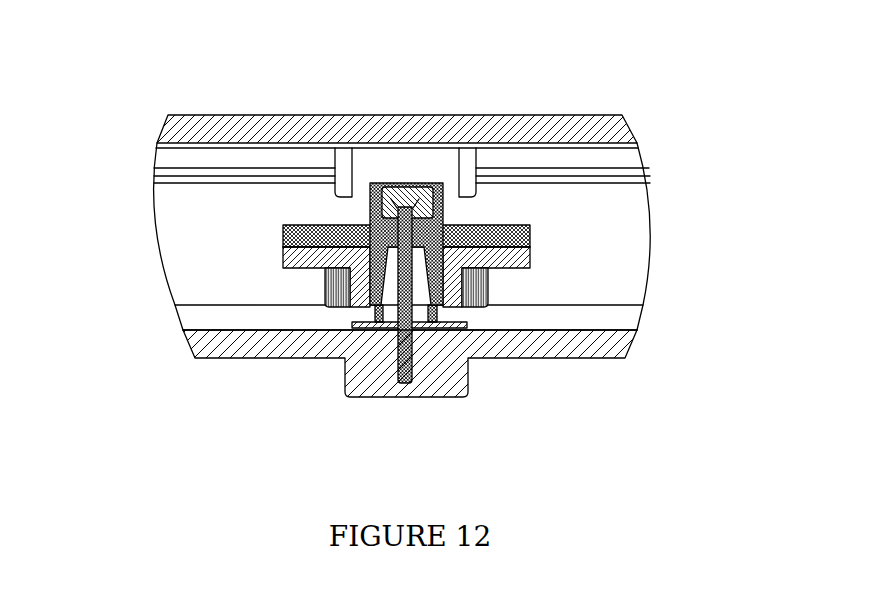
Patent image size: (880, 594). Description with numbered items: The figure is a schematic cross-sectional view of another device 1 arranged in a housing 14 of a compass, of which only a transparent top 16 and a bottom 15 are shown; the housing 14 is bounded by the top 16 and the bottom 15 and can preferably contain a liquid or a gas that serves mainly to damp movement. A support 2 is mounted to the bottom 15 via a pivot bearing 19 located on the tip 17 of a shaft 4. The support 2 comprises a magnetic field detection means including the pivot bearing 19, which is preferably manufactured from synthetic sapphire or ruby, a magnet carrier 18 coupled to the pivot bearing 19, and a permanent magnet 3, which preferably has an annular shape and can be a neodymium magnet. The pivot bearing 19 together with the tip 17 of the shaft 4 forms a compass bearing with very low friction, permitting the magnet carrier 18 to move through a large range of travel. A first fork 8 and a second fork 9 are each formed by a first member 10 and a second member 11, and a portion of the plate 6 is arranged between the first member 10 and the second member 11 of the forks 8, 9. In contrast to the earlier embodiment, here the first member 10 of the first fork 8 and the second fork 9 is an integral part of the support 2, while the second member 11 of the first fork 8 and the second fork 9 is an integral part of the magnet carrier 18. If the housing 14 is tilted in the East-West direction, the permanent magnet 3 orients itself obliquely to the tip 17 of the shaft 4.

The device 1 is at (558, 202).
The support 2 is at (350, 165).
The permanent magnet 3 is at (333, 307).
The shaft 4 is at (418, 310).
The plate 6 is at (293, 268).
The first fork 8 is at (533, 258).
The second fork 9 is at (282, 258).
The first member 10 is at (498, 225).
The second member 11 is at (518, 270).
The housing 14 is at (222, 347).
The bottom 15 is at (585, 345).
The transparent top 16 is at (297, 133).
The tip 17 is at (421, 188).
The magnet carrier 18 is at (449, 307).
The pivot bearing 19 is at (393, 188).